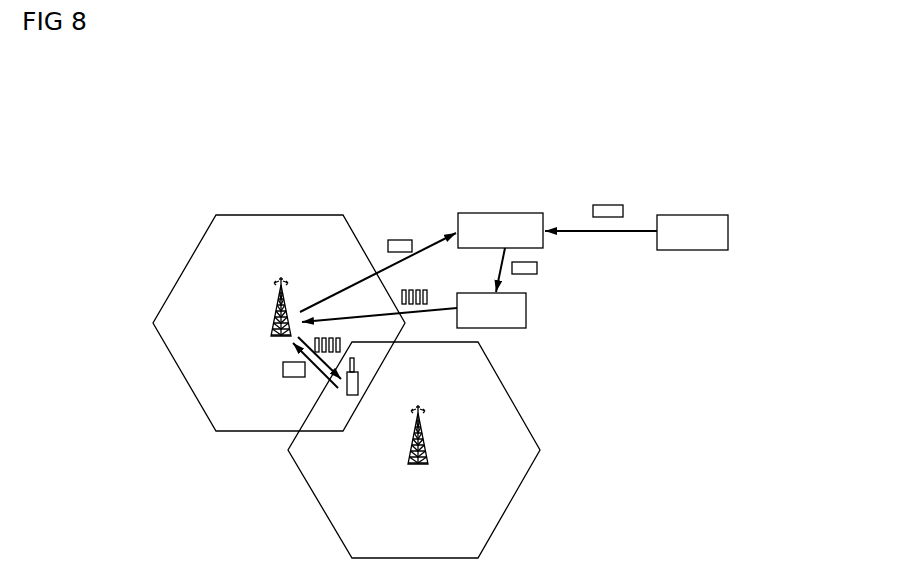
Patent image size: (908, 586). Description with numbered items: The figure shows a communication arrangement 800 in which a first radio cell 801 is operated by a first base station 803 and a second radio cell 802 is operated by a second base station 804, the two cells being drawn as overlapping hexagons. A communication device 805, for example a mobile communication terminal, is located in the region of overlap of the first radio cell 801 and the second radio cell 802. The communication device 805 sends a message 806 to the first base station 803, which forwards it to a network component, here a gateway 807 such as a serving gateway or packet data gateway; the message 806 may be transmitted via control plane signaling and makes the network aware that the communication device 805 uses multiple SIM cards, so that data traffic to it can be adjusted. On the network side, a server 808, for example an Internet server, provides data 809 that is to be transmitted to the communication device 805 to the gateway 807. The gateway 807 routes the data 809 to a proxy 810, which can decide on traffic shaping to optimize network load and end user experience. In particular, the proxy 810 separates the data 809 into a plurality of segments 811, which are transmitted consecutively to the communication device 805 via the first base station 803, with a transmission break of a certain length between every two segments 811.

The communication arrangement 800 is at (838, 73).
The first radio cell 801 is at (333, 213).
The second radio cell 802 is at (508, 397).
The first base station 803 is at (272, 316).
The second base station 804 is at (425, 438).
The communication device 805 is at (358, 380).
The message 806 is at (398, 240).
The gateway 807 is at (490, 213).
The server 808 is at (717, 215).
The data 809 is at (618, 205).
The proxy 810 is at (526, 312).
The segments 811 is at (424, 290).